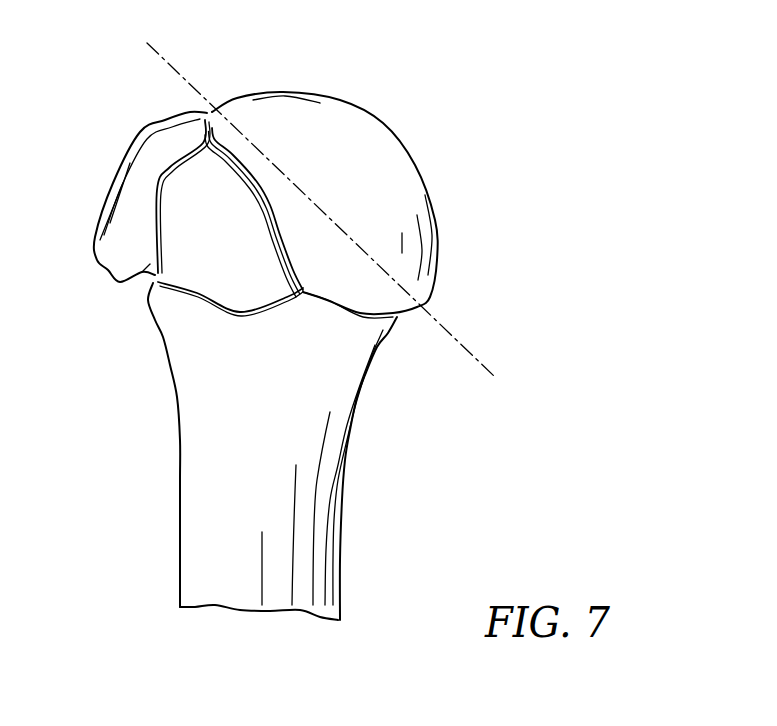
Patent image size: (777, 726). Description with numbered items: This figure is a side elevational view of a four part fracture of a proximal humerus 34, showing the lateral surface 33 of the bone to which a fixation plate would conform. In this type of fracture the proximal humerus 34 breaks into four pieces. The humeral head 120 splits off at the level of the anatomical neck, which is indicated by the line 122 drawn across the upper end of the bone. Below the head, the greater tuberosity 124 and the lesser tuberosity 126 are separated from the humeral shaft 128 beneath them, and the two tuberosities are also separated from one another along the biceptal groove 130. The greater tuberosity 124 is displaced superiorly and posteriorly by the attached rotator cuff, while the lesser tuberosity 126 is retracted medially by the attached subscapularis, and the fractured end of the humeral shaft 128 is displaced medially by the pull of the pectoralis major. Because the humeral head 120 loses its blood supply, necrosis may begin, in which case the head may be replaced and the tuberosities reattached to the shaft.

The lateral surface 33 is at (178, 517).
The proximal humerus 34 is at (337, 360).
The humeral head 120 is at (420, 292).
The line 122 is at (487, 367).
The greater tuberosity 124 is at (130, 167).
The lesser tuberosity 126 is at (167, 213).
The humeral shaft 128 is at (330, 430).
The biceptal groove 130 is at (148, 263).